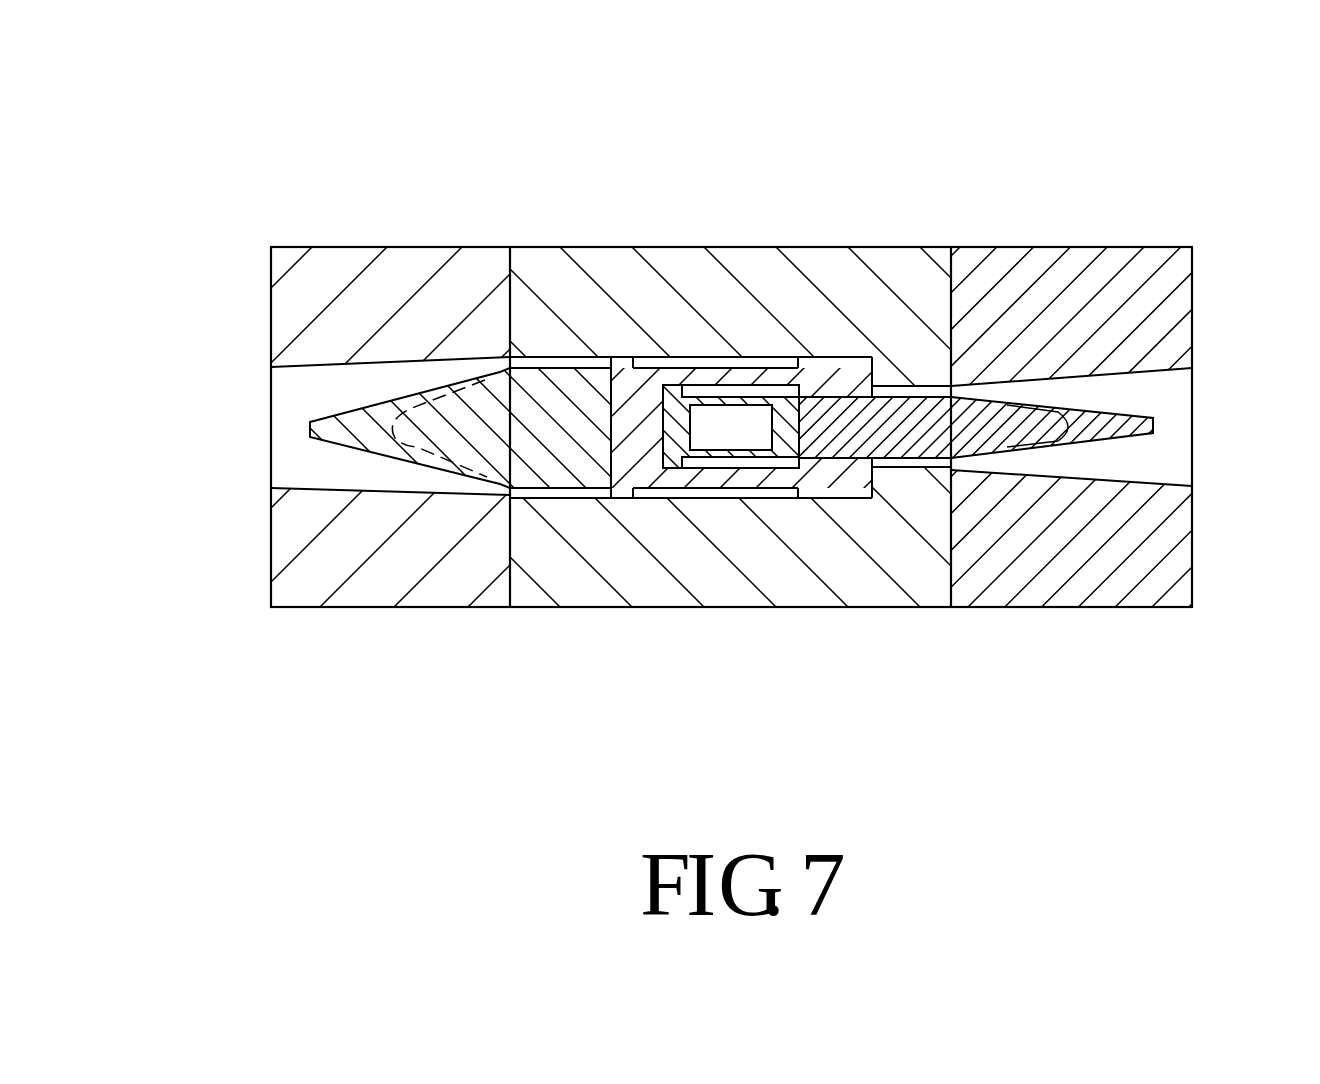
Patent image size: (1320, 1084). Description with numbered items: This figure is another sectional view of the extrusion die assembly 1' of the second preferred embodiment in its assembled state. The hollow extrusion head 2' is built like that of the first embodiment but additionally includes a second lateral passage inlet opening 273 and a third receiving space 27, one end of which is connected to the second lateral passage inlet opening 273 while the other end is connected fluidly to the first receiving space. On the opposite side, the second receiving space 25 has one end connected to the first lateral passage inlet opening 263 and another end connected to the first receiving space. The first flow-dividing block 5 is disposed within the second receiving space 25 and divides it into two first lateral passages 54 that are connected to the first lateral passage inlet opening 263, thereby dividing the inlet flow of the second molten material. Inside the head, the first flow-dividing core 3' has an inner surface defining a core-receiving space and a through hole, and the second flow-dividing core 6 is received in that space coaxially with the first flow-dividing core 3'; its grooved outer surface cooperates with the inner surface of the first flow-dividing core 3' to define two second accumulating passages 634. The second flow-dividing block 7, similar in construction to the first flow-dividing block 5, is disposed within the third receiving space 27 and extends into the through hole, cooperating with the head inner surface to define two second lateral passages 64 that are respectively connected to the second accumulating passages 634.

The extrusion die assembly 1' is at (748, 343).
The hollow extrusion head 2' is at (740, 499).
The first flow-dividing core 3' is at (745, 485).
The first flow-dividing block 5 is at (465, 447).
The first lateral passages 54 is at (528, 362).
The second flow-dividing core 6 is at (786, 420).
The second accumulating passages 634 is at (734, 392).
The second lateral passages 64 is at (1010, 463).
The second flow-dividing block 7 is at (1107, 430).
The second receiving space 25 is at (335, 470).
The first lateral passage inlet opening 263 is at (283, 392).
The third receiving space 27 is at (1069, 393).
The second lateral passage inlet opening 273 is at (1167, 392).